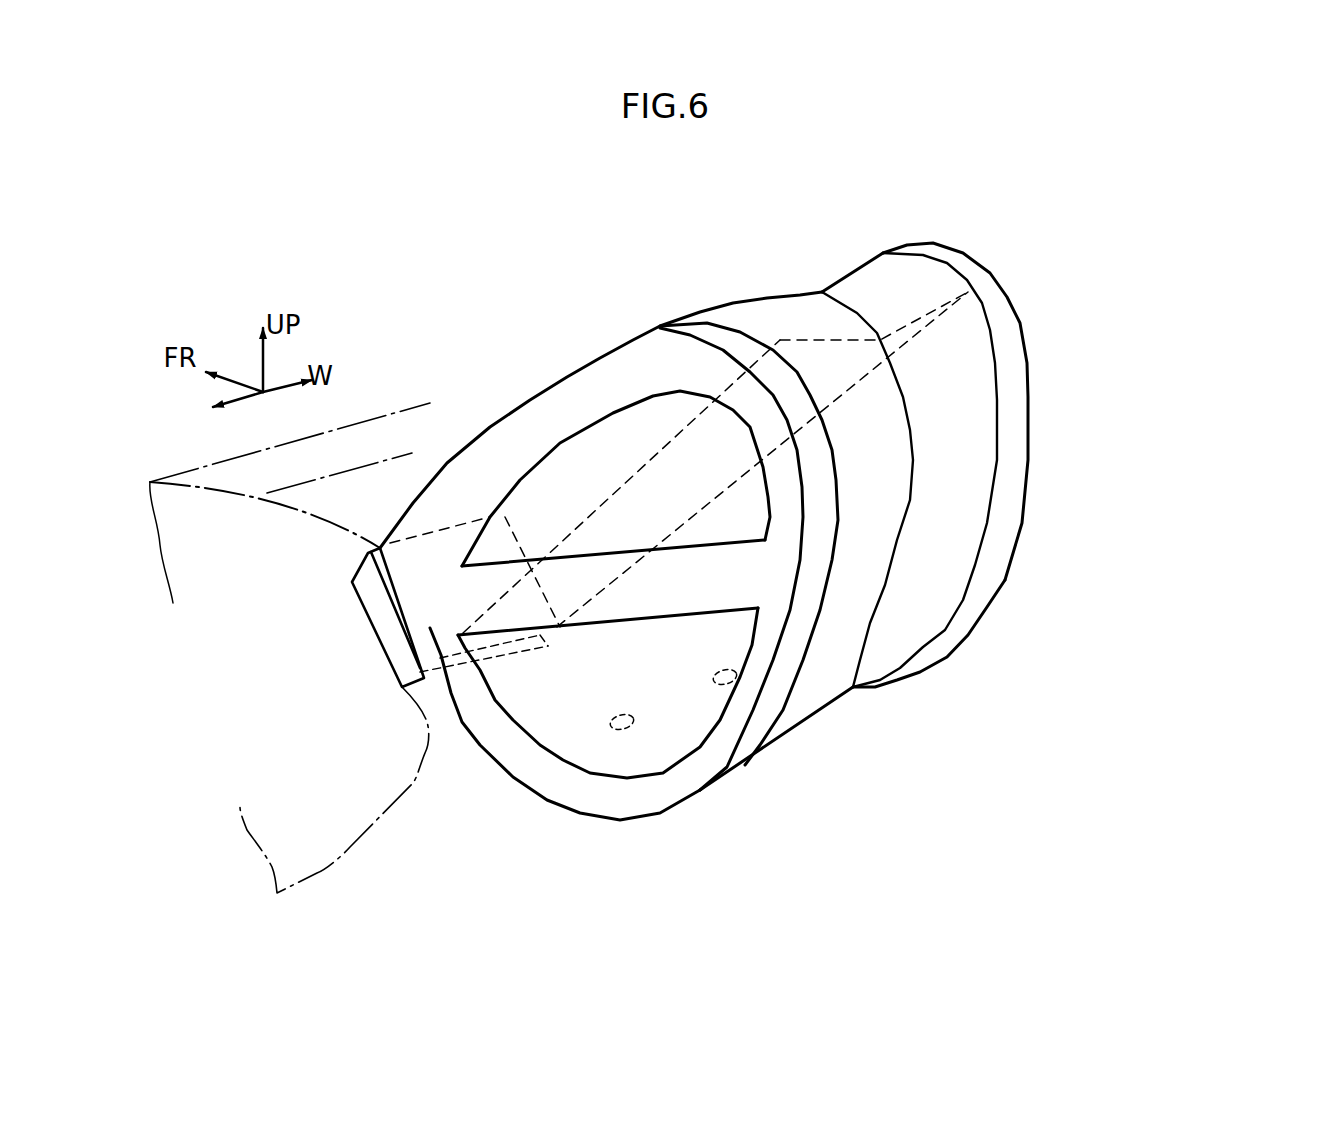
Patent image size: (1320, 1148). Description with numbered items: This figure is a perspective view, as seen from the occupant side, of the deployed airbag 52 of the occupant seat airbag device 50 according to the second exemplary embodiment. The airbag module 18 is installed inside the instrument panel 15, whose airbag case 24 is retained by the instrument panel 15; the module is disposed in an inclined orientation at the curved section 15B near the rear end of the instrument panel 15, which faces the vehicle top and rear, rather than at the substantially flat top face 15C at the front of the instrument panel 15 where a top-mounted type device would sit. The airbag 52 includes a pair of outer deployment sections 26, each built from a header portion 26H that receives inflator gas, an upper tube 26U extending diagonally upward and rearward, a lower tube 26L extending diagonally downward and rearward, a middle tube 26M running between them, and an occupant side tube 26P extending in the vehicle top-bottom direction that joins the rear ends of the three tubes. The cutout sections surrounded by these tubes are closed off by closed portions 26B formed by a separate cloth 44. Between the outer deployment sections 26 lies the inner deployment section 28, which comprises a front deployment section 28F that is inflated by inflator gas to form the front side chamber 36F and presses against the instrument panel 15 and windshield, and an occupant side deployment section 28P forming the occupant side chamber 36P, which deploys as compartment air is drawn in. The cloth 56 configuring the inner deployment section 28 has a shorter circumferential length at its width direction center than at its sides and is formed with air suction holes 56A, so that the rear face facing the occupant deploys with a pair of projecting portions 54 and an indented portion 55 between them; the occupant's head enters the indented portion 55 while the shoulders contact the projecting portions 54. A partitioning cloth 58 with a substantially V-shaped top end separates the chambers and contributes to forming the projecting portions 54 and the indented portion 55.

The instrument panel 15 is at (340, 450).
The curved section 15B is at (413, 453).
The top face 15C is at (300, 453).
The airbag module 18 is at (333, 632).
The airbag case 24 is at (378, 648).
The outer deployment section 26 is at (1010, 401).
The upper tube 26U is at (548, 393).
The lower tube 26L is at (580, 797).
The occupant side tube 26P is at (780, 597).
The closed portion 26B is at (647, 417).
The middle tube 26M is at (670, 597).
The header portion 26H is at (427, 618).
The inner deployment section 28 is at (967, 441).
The front deployment section 28F is at (930, 293).
The occupant side deployment section 28P is at (975, 353).
The front side chamber 36F is at (1000, 210).
The occupant side chamber 36P is at (1160, 258).
The cloth 44 is at (608, 499).
The occupant seat airbag device 50 is at (1190, 258).
The airbag 52 is at (1140, 370).
The projecting portion 54 is at (760, 308).
The indented portion 55 is at (822, 292).
The cloth 56 is at (927, 636).
The air suction holes 56A is at (717, 690).
The partitioning cloth 58 is at (820, 360).